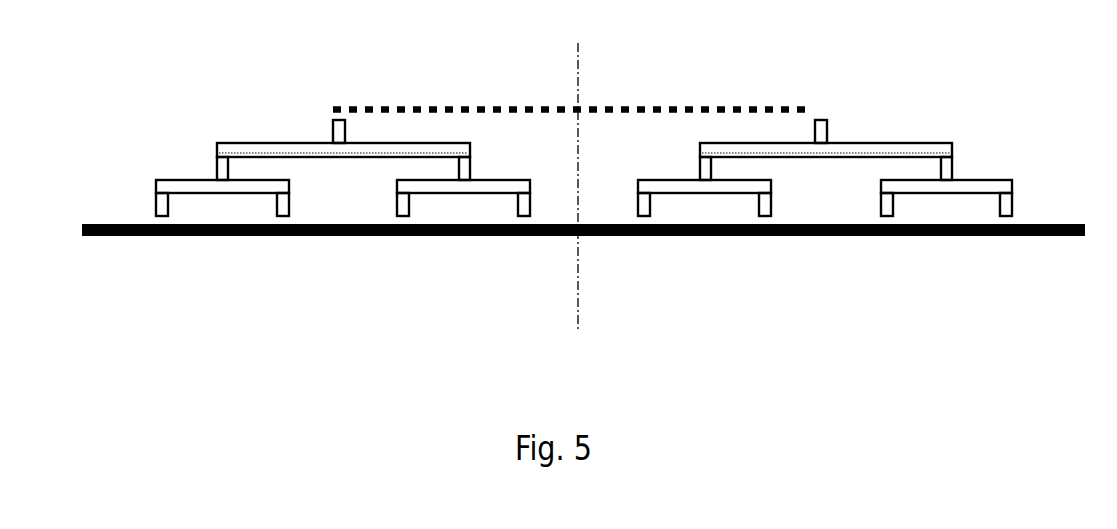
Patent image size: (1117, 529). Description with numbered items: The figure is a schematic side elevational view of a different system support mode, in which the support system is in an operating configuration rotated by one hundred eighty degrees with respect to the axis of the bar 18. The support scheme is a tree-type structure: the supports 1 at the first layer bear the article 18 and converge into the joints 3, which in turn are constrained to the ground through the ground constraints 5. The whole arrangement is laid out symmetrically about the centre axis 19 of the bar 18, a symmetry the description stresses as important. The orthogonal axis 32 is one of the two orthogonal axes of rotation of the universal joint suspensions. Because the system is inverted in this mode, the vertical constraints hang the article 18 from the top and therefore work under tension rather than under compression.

The support 1 is at (143, 218).
The article 18 is at (83, 204).
The joint 3 is at (209, 172).
The ground constraint 5 is at (362, 117).
The orthogonal axis 32 is at (542, 92).
The centre axis 19 is at (560, 308).